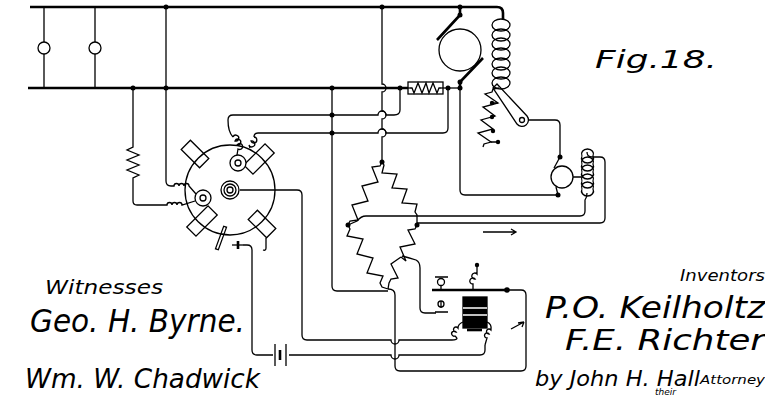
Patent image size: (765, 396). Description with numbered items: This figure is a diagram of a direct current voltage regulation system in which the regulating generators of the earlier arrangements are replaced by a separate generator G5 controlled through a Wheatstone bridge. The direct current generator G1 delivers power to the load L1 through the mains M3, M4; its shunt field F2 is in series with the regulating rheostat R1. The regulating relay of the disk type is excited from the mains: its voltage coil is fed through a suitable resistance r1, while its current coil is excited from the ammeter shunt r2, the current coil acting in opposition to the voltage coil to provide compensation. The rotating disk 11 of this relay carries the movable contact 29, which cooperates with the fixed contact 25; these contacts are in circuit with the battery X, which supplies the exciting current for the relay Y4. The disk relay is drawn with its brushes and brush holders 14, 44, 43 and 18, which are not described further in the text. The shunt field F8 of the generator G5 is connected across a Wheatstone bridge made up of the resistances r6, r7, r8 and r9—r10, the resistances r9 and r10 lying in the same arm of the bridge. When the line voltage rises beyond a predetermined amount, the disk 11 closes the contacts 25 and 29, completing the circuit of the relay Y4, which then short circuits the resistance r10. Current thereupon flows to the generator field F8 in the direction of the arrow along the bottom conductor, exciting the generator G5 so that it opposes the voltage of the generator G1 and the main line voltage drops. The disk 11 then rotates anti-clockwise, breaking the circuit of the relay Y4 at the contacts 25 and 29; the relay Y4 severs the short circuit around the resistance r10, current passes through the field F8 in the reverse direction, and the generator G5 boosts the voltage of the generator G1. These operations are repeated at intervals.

The main M3 is at (265, 48).
The load L1 is at (84, 47).
The main M4 is at (229, 194).
The motor brush 14 is at (207, 135).
The motor brush with coil 44 is at (318, 181).
The disk 11 is at (188, 212).
The brush holder 43 is at (192, 237).
The motor brush 18 is at (266, 245).
The movable contact 29 is at (211, 252).
The fixed contact 25 is at (234, 253).
The resistance r1 is at (152, 153).
The ammeter shunt r2 is at (431, 101).
The resistance r6 is at (361, 195).
The resistance r7 is at (404, 195).
The resistance r8 is at (362, 257).
The resistance r9 is at (422, 243).
The resistance r10 is at (397, 272).
The direct current generator G1 is at (446, 47).
The generator G5 is at (549, 176).
The shunt field F2 is at (512, 38).
The shunt field F8 is at (589, 188).
The regulating rheostat R1 is at (519, 120).
The battery X is at (276, 317).
The relay Y4 is at (478, 304).